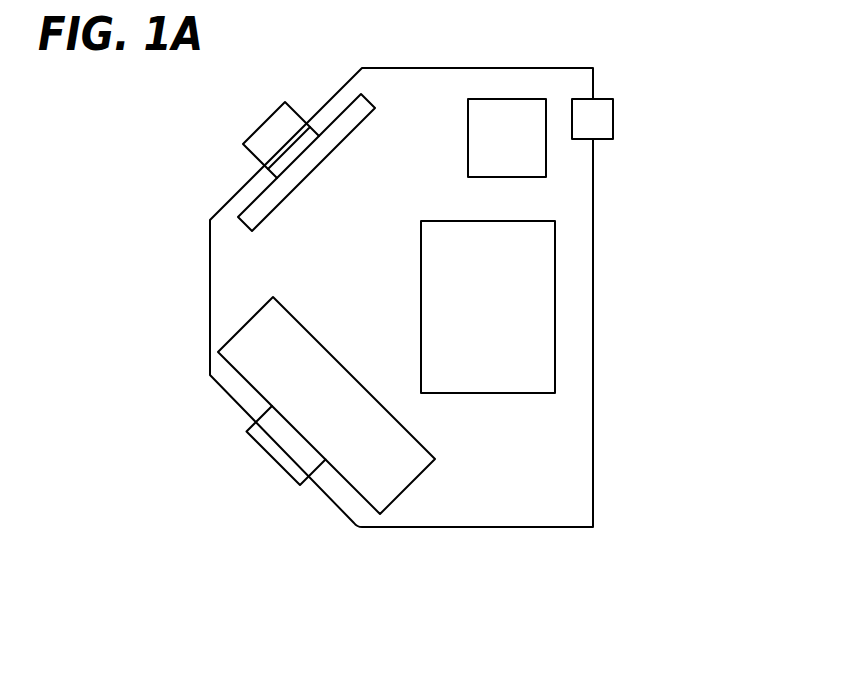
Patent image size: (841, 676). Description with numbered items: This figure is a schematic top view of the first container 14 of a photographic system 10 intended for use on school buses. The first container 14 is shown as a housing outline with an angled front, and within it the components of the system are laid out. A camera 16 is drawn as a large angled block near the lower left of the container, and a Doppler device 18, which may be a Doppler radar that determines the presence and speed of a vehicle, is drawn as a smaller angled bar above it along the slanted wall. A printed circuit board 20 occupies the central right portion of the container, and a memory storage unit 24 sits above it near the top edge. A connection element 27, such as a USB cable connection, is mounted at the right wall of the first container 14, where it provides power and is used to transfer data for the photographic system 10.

The photographic system 10 is at (286, 563).
The first container 14 is at (593, 509).
The camera 16 is at (300, 417).
The Doppler device 18 is at (347, 138).
The printed circuit board 20 is at (507, 314).
The memory storage unit 24 is at (528, 155).
The connection element 27 is at (605, 113).